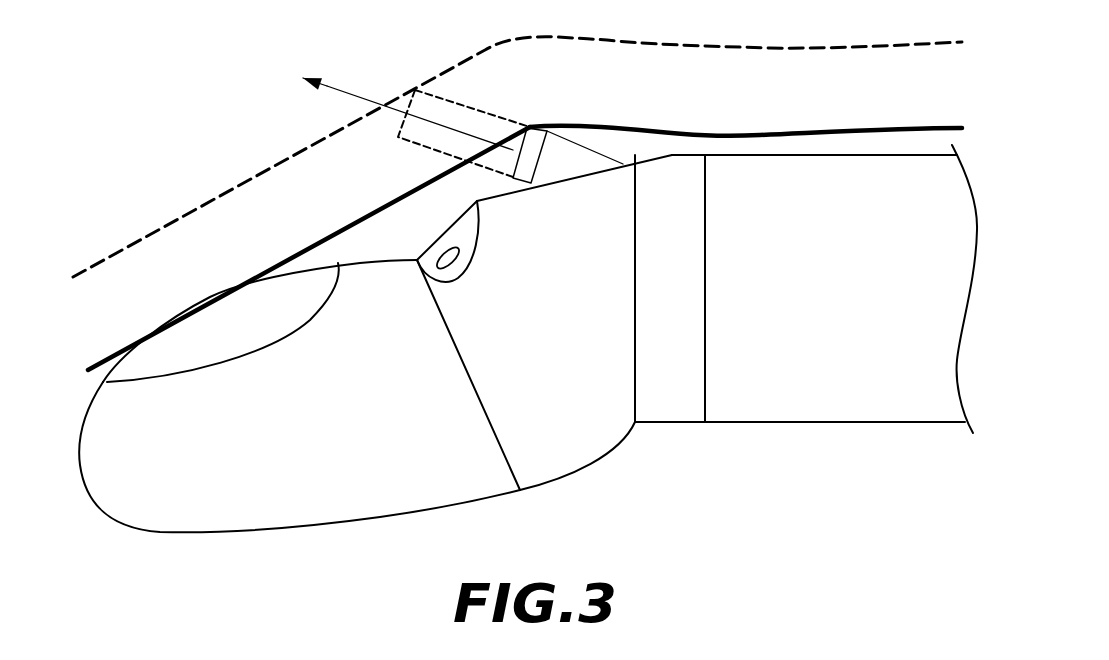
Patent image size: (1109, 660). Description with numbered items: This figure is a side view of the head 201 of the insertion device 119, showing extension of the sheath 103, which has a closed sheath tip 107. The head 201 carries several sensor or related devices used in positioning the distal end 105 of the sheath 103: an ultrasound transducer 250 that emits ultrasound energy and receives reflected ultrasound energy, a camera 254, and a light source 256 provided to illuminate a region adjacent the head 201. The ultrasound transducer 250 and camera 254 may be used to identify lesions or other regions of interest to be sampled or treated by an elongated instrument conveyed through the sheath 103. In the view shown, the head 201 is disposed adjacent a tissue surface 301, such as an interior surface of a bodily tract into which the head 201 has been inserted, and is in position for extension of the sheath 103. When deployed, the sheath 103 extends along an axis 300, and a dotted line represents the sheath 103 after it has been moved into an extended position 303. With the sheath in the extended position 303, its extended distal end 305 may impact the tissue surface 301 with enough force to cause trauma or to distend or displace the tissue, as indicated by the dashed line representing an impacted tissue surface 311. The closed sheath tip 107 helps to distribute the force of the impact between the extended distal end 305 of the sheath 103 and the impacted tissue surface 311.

The sheath 103 is at (623, 163).
The distal end 105 is at (528, 111).
The closed sheath tip 107 is at (546, 131).
The insertion device 119 is at (803, 423).
The head 201 is at (657, 512).
The ultrasound transducer 250 is at (157, 352).
The camera 254 is at (447, 238).
The light source 256 is at (447, 252).
The axis 300 is at (327, 88).
The tissue surface 301 is at (293, 254).
The extended position 303 is at (413, 146).
The extended distal end 305 is at (410, 76).
The impacted tissue surface 311 is at (207, 200).